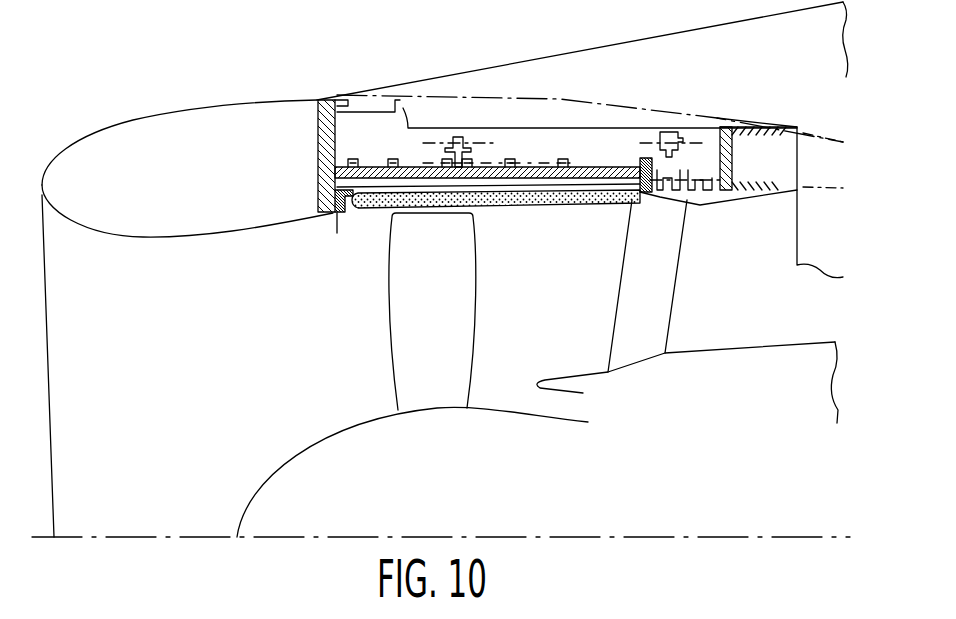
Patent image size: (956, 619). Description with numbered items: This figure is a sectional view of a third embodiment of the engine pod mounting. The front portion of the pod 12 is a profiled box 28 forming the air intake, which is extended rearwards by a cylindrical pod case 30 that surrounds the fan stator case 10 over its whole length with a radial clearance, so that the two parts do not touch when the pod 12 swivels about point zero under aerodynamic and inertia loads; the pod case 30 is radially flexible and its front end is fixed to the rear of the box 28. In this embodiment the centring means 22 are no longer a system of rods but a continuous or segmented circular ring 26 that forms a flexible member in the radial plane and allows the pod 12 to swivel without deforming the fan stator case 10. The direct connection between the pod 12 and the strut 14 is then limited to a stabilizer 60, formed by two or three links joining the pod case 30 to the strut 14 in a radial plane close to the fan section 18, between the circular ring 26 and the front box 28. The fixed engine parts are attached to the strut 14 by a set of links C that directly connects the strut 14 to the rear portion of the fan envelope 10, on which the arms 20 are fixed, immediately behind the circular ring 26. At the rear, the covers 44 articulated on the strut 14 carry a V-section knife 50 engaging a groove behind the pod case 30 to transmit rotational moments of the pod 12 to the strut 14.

The fan stator case 10 is at (497, 202).
The pod 12 is at (162, 114).
The strut 14 is at (688, 50).
The fan section 18 is at (410, 338).
The arms 20 is at (652, 307).
The centring means 22 is at (627, 209).
The circular ring 26 is at (643, 195).
The profiled box 28 is at (282, 120).
The pod case 30 is at (527, 167).
The covers 44 is at (767, 170).
The knife 50 is at (740, 137).
The stabilizer 60 is at (448, 148).
The set of links C is at (684, 162).